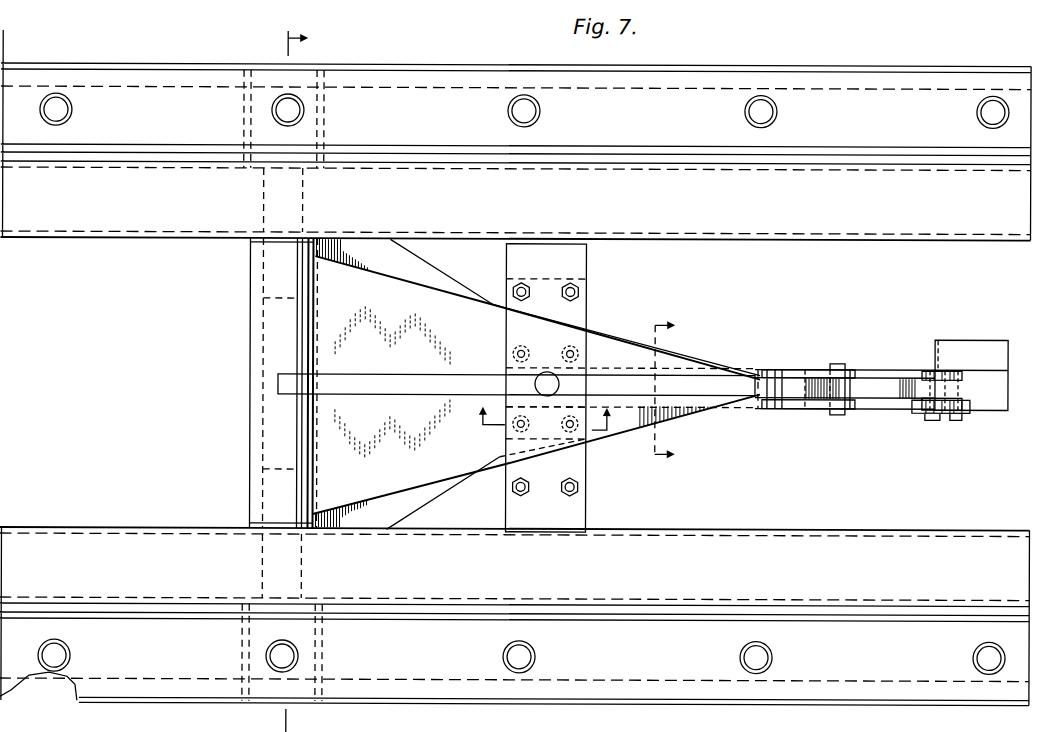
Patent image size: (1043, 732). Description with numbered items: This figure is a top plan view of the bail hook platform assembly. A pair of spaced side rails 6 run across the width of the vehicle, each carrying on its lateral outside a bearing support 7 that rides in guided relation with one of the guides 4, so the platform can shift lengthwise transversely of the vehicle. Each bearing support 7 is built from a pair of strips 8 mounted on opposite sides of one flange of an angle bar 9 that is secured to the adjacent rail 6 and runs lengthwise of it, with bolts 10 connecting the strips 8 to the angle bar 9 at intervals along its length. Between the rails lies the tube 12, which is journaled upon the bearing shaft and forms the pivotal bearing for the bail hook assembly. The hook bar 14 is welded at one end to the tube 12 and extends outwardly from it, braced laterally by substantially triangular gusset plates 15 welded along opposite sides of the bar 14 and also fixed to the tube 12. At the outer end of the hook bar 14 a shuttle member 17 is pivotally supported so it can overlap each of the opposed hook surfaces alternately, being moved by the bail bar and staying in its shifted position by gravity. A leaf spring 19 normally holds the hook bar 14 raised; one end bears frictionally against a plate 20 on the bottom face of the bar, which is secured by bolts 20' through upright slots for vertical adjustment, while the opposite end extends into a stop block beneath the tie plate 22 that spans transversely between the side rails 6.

The guide 4 is at (278, 379).
The side rail 6 is at (173, 222).
The bearing support 7 is at (970, 66).
The strip 8 is at (877, 88).
The angle bar 9 is at (425, 715).
The bolt 10 is at (58, 101).
The tube 12 is at (250, 371).
The hook bar 14 is at (692, 381).
The gusset plate 15 is at (596, 334).
The shuttle member 17 is at (797, 388).
The leaf spring 19 is at (762, 366).
The plate 20 is at (975, 399).
The bolt 20' is at (941, 418).
The tie plate 22 is at (576, 514).